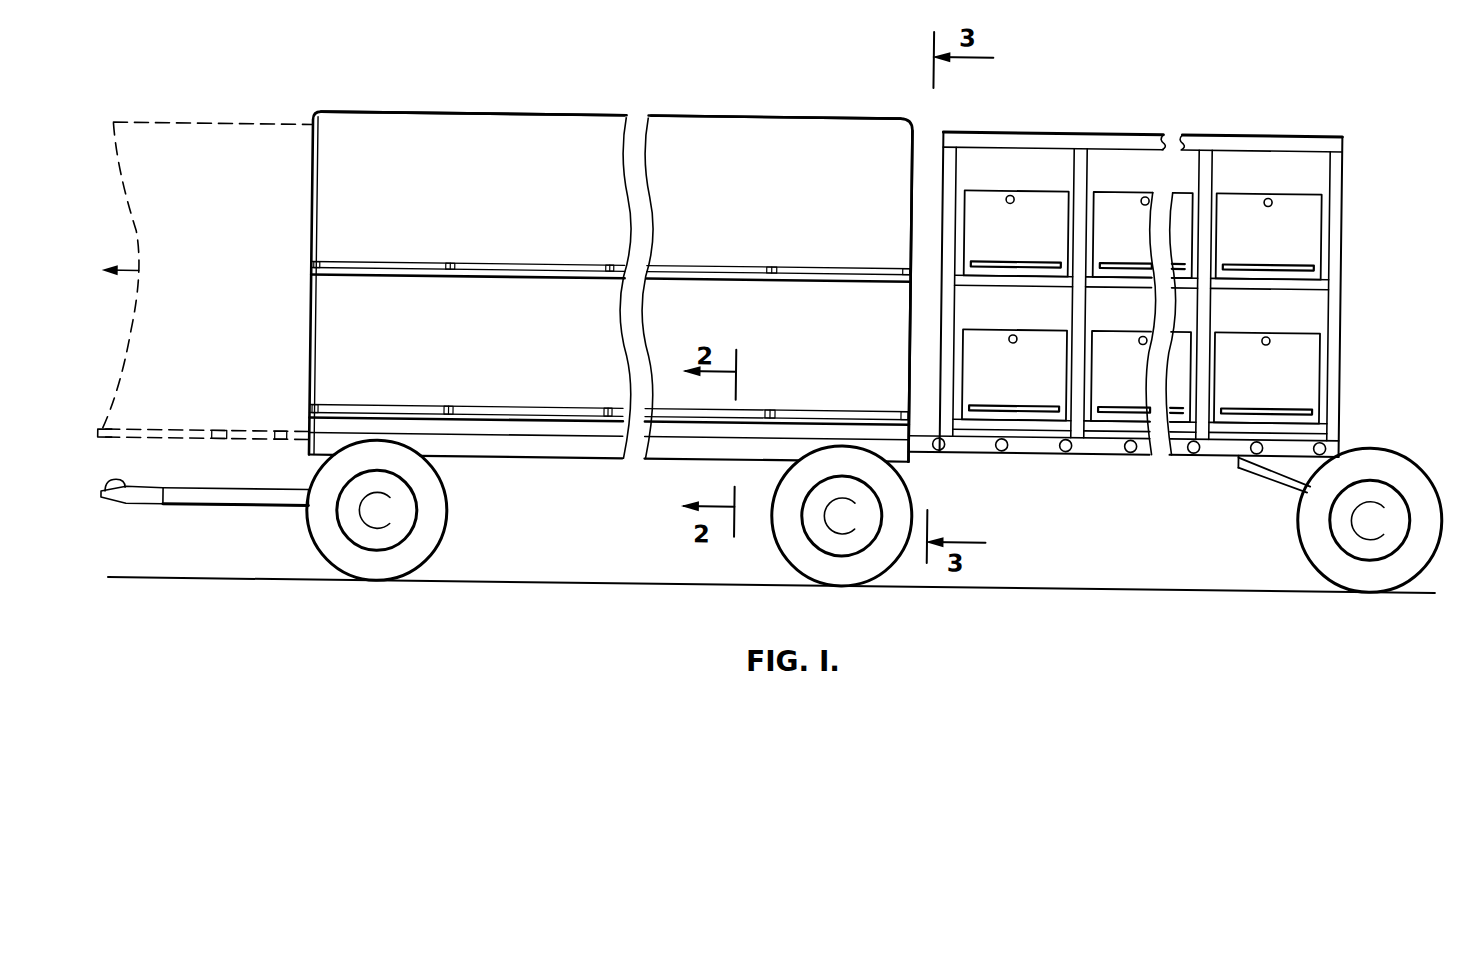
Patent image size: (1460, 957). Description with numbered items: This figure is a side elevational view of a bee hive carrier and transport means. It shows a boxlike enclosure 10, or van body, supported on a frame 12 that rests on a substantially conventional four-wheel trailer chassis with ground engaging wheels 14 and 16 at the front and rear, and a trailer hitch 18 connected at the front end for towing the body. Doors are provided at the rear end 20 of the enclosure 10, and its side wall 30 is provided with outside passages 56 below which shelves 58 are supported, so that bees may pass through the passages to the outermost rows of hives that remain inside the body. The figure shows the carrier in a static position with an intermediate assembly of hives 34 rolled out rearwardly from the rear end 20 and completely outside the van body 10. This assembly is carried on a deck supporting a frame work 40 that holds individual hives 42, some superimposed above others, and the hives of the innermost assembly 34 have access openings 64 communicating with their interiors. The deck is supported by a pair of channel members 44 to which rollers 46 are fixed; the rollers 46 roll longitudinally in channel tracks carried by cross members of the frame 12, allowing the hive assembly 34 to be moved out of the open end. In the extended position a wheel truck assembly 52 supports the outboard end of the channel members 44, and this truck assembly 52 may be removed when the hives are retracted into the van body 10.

The boxlike enclosure 10 is at (664, 110).
The frame 12 is at (592, 453).
The ground engaging wheel 14 is at (434, 534).
The ground engaging wheel 16 is at (790, 558).
The trailer hitch 18 is at (128, 485).
The rear end 20 is at (910, 131).
The side 30 is at (485, 190).
The intermediate rows of hives 34 is at (1167, 100).
The frame work 40 is at (1338, 136).
The hives 42 is at (970, 184).
The channel members 44 is at (1236, 446).
The rollers 46 is at (1129, 443).
The wheel truck assembly 52 is at (1380, 468).
The outside passages 56 is at (378, 258).
The shelves 58 is at (578, 264).
The access openings 64 is at (1136, 188).